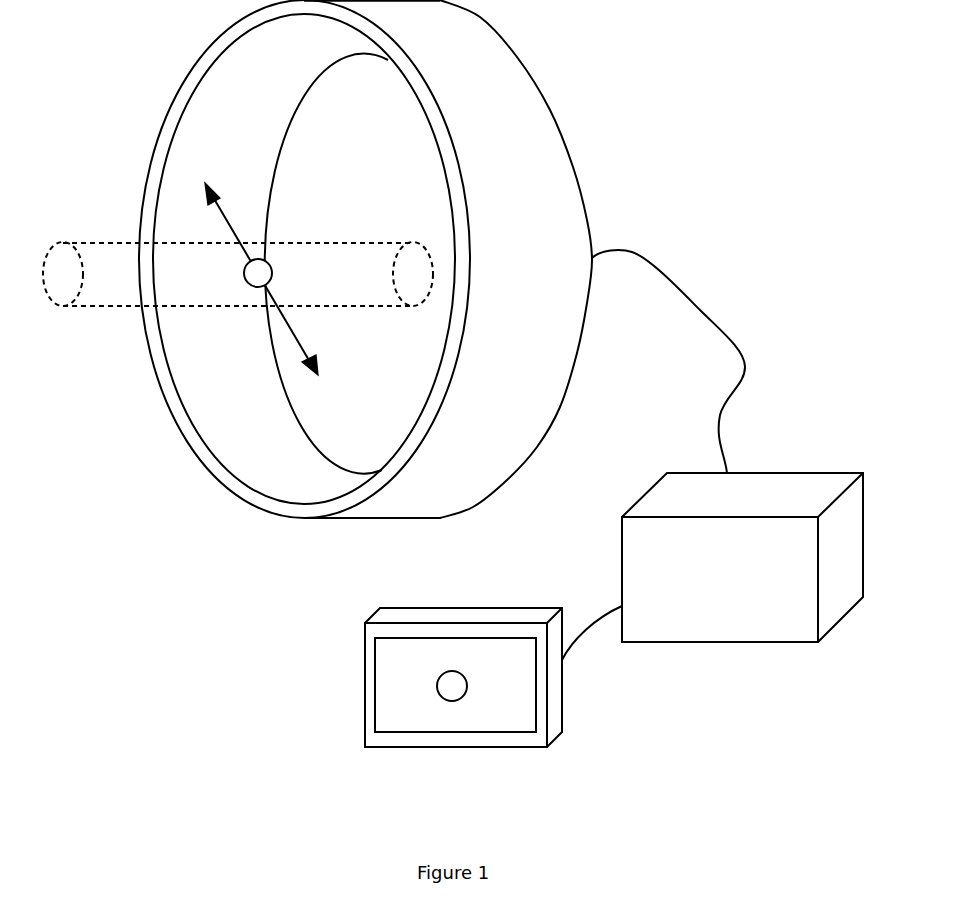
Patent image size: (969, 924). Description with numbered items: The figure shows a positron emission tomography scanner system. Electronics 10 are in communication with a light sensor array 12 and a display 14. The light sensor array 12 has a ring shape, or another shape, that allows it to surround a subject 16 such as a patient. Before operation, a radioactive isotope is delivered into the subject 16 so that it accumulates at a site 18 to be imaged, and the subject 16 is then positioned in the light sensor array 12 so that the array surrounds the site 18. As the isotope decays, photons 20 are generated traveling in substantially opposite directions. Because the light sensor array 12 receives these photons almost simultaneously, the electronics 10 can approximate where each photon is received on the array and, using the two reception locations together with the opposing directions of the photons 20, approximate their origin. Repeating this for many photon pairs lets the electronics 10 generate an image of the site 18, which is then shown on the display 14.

The electronics 10 is at (802, 483).
The light sensor array 12 is at (203, 458).
The display 14 is at (370, 702).
The subject 16 is at (100, 290).
The site 18 is at (258, 272).
The photons 20 is at (232, 218).